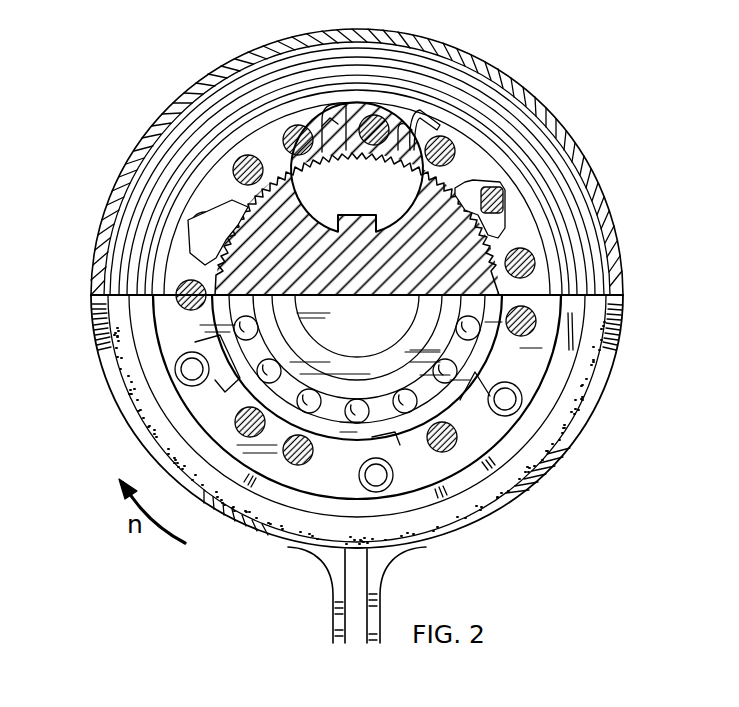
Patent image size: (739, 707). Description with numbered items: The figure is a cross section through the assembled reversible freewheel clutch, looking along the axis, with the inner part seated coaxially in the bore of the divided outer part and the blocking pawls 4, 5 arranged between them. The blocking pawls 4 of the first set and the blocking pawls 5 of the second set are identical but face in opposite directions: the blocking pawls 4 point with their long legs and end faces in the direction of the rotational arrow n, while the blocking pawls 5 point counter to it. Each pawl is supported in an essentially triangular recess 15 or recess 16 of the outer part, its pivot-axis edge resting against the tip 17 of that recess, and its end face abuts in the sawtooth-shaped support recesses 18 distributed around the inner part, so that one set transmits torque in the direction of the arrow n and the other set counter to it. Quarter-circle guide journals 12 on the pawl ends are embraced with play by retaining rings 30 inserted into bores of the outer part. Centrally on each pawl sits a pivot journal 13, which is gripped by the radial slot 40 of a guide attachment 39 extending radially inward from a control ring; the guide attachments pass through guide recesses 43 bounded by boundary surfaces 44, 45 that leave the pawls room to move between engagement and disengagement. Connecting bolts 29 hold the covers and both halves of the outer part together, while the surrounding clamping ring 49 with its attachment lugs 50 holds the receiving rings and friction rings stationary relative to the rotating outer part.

The blocking pawl 4 is at (498, 222).
The blocking pawl 5 is at (313, 153).
The guide journal 12 is at (359, 475).
The pivot journal 13 is at (378, 118).
The recess 15 is at (400, 435).
The recess 16 is at (228, 380).
The tip 17 is at (191, 366).
The support recess 18 is at (470, 192).
The connecting bolt 29 is at (176, 300).
The retaining ring 30 is at (507, 397).
The guide attachment 39 is at (412, 133).
The radial slot 40 is at (420, 116).
The guide recess 43 is at (332, 116).
The boundary surface 44 is at (318, 118).
The boundary surface 45 is at (455, 173).
The clamping ring 49 is at (445, 535).
The attachment lug 50 is at (380, 585).